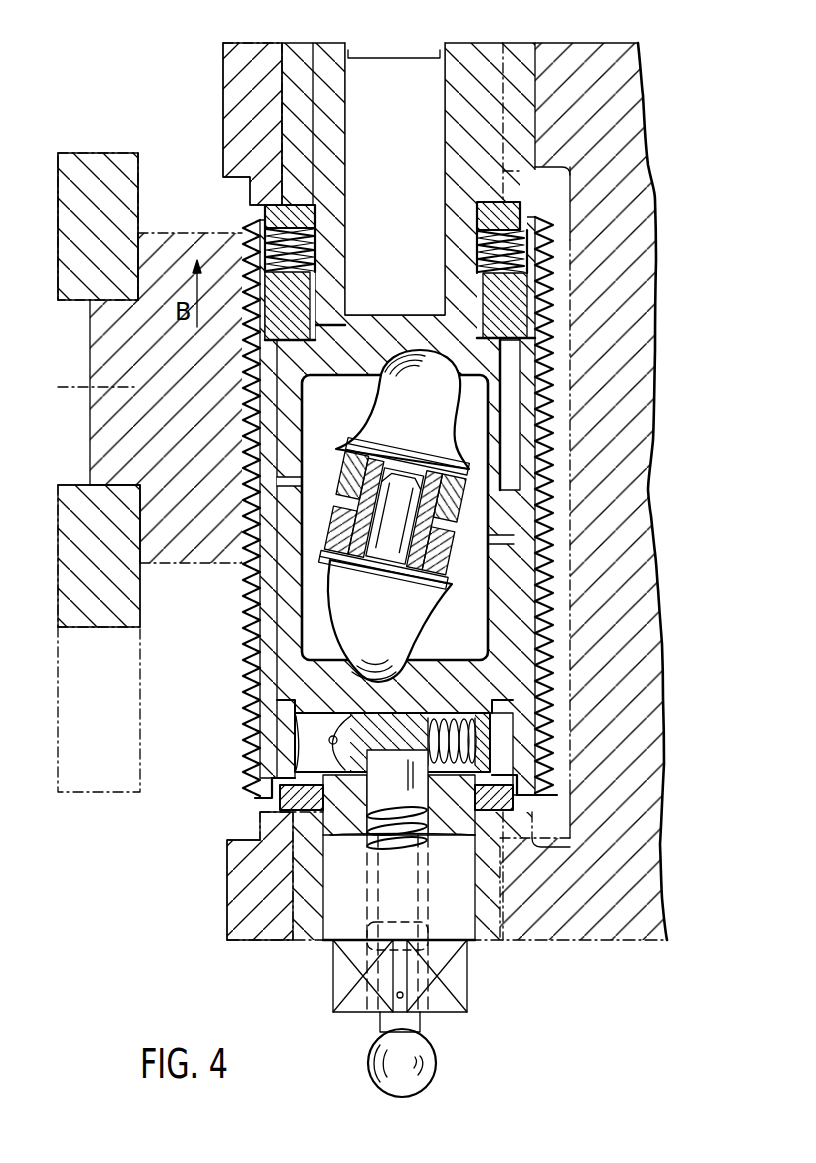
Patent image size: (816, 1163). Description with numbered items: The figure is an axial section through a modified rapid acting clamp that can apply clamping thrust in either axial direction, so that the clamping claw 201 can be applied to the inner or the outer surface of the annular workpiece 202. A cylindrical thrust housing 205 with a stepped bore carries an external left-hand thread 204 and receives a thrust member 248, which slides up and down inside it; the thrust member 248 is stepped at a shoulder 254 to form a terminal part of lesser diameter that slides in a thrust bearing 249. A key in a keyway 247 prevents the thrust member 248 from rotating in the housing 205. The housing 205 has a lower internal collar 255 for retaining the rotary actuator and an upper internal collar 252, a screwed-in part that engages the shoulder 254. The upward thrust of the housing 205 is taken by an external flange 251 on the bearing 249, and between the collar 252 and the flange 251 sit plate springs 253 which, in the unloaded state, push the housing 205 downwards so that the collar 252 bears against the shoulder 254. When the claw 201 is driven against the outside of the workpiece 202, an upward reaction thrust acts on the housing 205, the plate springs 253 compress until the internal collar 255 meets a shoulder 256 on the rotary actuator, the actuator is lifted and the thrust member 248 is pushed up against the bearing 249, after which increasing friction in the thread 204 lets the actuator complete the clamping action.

The clamping claw 201 is at (125, 393).
The workpiece 202 is at (118, 158).
The external left-hand thread 204 is at (247, 265).
The thrust housing 205 is at (549, 356).
The keyway 247 is at (511, 423).
The thrust member 248 is at (425, 63).
The thrust bearing 249 is at (327, 62).
The external flange 251 is at (507, 217).
The upper internal collar 252 is at (500, 297).
The plate springs 253 is at (487, 250).
The shoulder 254 is at (323, 340).
The internal collar 255 is at (524, 731).
The shoulder 256 is at (463, 660).